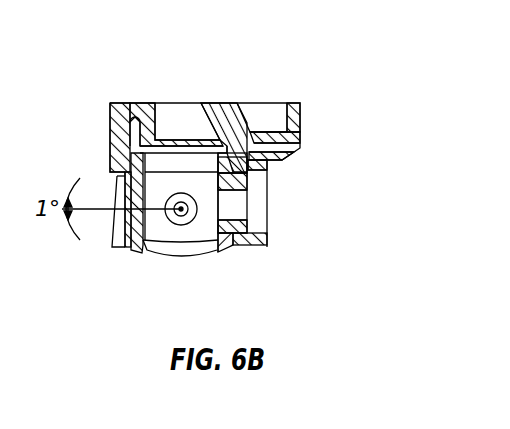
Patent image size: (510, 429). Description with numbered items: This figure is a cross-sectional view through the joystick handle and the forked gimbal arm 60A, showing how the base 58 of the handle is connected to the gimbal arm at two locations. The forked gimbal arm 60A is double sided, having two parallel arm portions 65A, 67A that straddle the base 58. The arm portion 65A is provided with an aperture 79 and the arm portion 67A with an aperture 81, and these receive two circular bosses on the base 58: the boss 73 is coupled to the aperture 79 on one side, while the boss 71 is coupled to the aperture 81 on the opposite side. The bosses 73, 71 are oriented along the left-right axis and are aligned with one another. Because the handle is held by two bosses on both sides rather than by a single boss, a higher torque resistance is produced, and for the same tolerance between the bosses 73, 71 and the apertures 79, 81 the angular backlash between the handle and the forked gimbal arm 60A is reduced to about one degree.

The first gimbal arm 60A is at (173, 121).
The aperture 81 is at (110, 173).
The boss 71 is at (112, 233).
The arm portion 67A is at (118, 252).
The base 58 is at (180, 258).
The boss 73 is at (247, 198).
The aperture 79 is at (268, 227).
The arm portion 65A is at (255, 248).